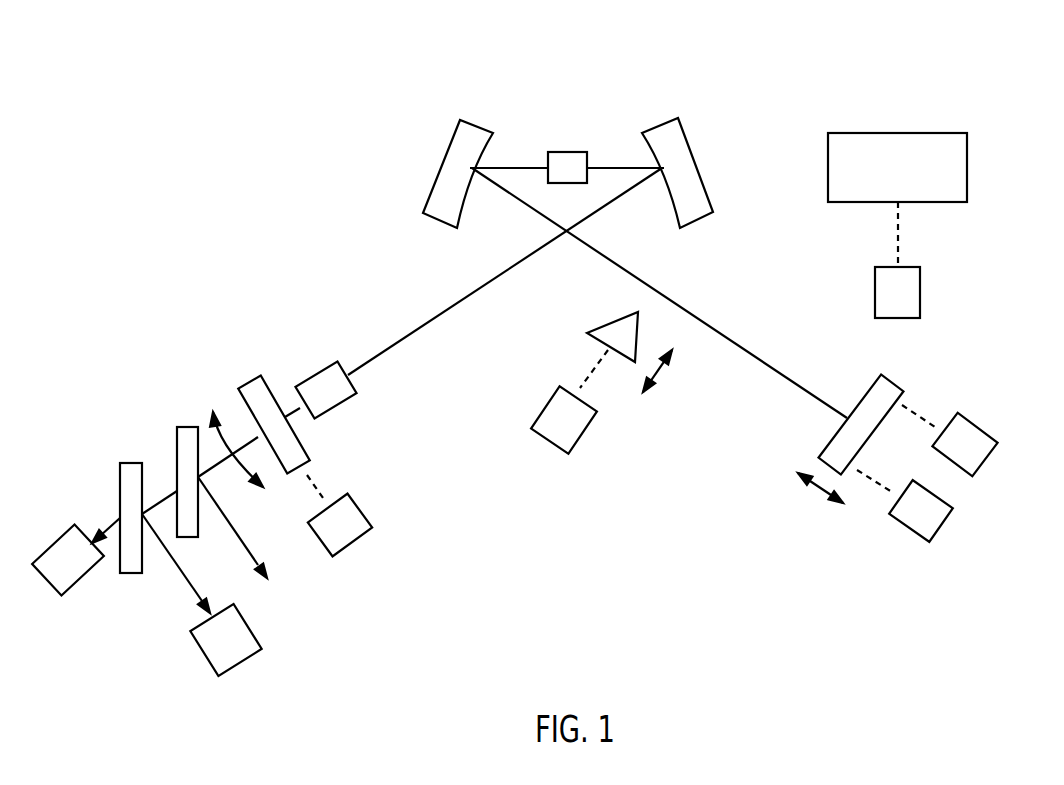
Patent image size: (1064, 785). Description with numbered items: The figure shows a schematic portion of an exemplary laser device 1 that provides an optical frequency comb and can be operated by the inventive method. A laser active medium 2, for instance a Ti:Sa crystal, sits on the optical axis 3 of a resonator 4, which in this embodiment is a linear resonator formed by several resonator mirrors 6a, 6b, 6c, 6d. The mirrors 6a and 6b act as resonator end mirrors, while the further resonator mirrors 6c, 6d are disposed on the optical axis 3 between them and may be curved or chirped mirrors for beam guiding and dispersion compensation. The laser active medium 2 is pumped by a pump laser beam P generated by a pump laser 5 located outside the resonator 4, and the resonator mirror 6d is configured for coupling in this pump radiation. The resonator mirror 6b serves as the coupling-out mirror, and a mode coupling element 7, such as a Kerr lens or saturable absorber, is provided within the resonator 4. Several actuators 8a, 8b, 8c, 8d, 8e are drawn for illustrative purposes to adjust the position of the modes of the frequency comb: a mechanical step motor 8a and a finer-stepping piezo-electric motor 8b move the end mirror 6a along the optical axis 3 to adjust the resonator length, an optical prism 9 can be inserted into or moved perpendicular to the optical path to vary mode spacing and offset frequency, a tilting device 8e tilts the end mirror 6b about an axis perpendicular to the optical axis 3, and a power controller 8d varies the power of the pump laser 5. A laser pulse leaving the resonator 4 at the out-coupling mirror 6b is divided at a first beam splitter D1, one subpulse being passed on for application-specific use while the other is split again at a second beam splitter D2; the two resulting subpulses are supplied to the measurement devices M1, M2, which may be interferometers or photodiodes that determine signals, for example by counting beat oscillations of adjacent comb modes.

The laser device 1 is at (997, 91).
The laser active medium 2 is at (566, 152).
The optical axis 3 is at (757, 357).
The resonator 4 is at (318, 240).
The pump laser 5 is at (907, 179).
The resonator end mirror 6a is at (890, 385).
The resonator end mirror 6b is at (250, 385).
The resonator mirror 6c is at (475, 130).
The resonator mirror 6d is at (662, 134).
The mode coupling element 7 is at (334, 403).
The mechanical step motor 8a is at (979, 459).
The piezo-electric motor 8b is at (935, 526).
The actuator 8c is at (578, 434).
The power controller 8d is at (912, 305).
The tilting device 8e is at (354, 540).
The optical prism 9 is at (628, 348).
The pump laser beam P is at (808, 168).
The first beam splitter D1 is at (185, 433).
The second beam splitter D2 is at (130, 470).
The measurement device M1 is at (85, 575).
The measurement device M2 is at (243, 655).